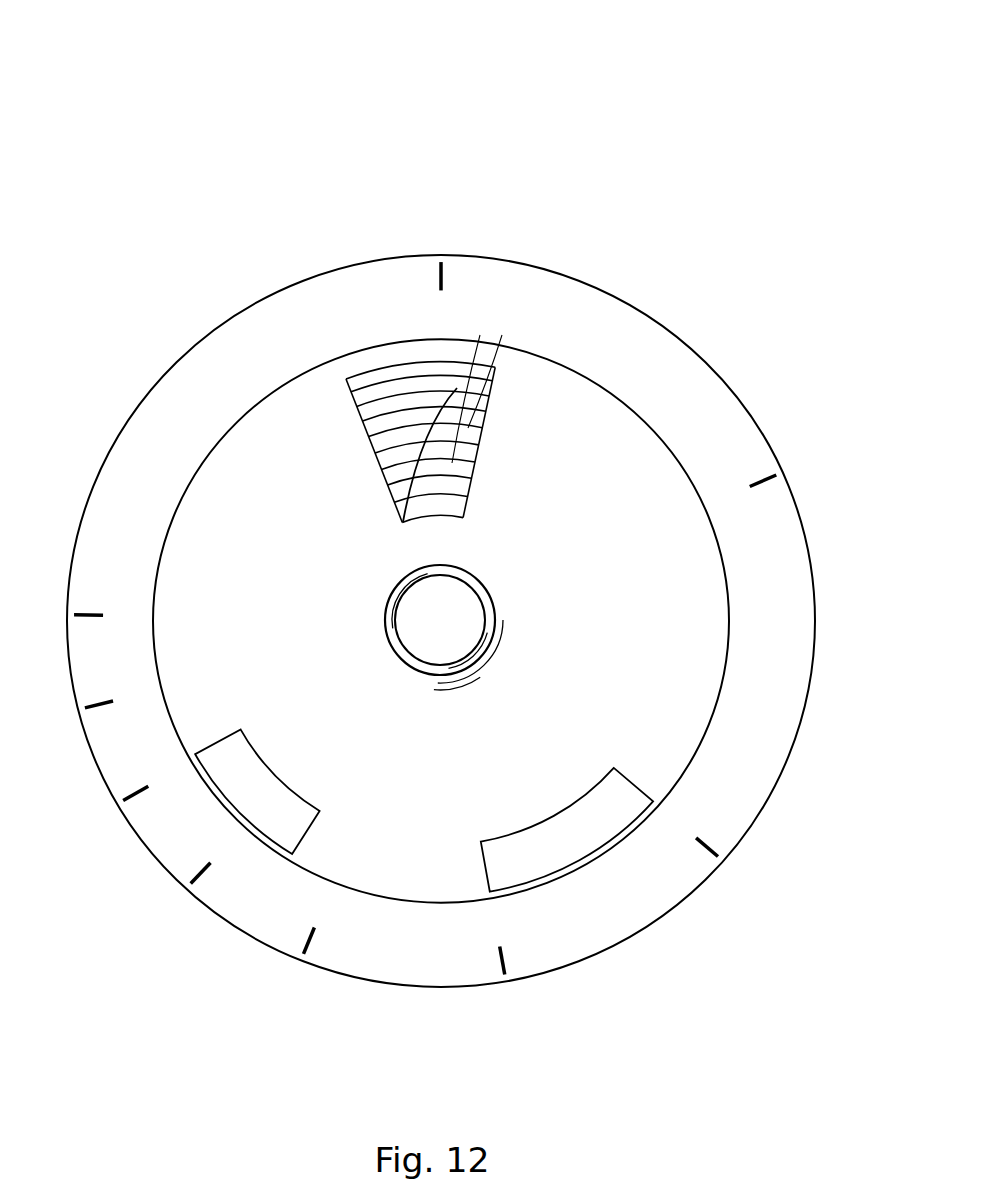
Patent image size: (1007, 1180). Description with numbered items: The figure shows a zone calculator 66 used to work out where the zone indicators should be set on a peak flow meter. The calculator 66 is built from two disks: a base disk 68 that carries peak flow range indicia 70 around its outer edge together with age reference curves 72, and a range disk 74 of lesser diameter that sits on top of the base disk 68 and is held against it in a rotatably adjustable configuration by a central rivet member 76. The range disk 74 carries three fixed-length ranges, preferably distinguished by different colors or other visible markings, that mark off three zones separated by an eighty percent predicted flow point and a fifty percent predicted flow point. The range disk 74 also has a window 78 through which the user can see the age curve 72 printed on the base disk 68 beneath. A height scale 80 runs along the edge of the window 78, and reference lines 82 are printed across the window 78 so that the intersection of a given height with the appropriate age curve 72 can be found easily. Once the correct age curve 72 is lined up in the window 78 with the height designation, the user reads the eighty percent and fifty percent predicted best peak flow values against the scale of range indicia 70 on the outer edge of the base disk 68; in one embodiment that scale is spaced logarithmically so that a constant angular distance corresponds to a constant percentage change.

The zone calculator 66 is at (592, 64).
The base disk 68 is at (750, 765).
The peak flow range indicia 70 is at (705, 858).
The age reference curves 72 is at (430, 427).
The range disk 74 is at (613, 500).
The central rivet member 76 is at (422, 617).
The window 78 is at (427, 351).
The height scale 80 is at (543, 404).
The reference lines 82 is at (452, 463).